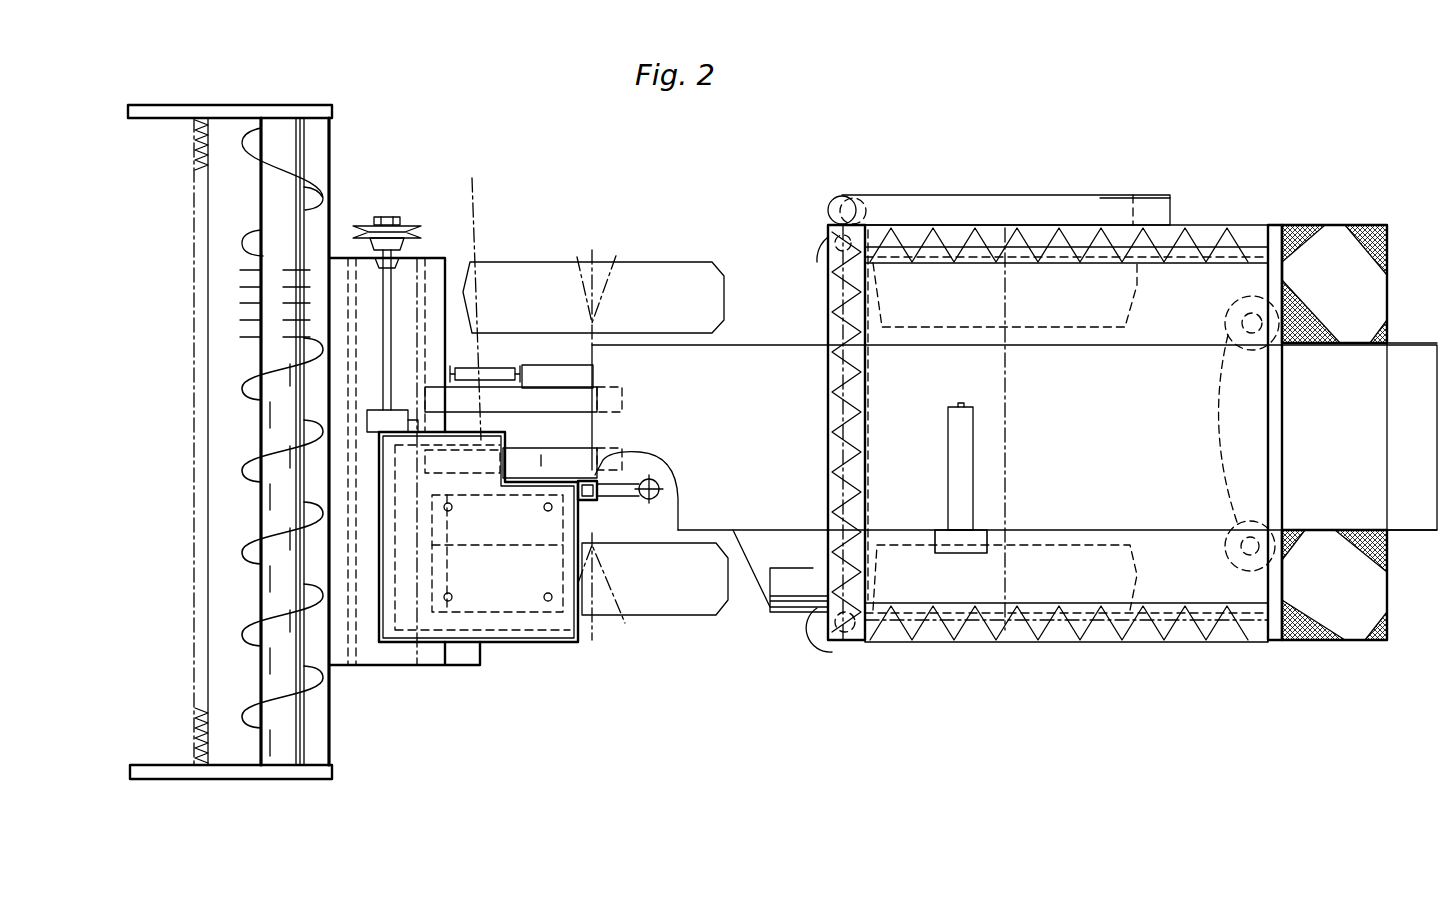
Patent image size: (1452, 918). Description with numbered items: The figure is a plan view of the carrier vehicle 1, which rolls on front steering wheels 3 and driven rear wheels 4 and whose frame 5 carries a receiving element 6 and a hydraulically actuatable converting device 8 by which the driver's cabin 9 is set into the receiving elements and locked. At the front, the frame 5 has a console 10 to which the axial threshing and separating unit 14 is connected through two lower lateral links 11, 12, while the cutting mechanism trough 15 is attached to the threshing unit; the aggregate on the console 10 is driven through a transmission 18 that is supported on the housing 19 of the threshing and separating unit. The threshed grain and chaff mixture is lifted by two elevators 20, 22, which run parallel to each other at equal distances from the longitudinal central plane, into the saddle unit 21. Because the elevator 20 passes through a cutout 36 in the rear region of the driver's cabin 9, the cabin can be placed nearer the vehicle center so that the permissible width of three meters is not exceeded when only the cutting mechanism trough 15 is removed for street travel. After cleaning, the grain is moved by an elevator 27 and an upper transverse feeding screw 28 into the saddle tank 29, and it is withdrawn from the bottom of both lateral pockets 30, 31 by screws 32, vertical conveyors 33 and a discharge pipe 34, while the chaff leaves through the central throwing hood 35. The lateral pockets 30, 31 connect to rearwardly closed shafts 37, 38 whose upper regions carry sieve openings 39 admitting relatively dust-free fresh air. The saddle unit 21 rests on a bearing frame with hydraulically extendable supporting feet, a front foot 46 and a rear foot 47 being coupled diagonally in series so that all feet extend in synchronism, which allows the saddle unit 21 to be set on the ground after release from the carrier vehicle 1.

The carrier vehicle 1 is at (652, 254).
The front steering wheels 3 is at (712, 300).
The rear wheels 4 is at (1073, 320).
The frame 5 is at (667, 505).
The receiving element 6 is at (545, 509).
The converting device 8 is at (661, 488).
The driver's cabin 9 is at (393, 643).
The front console 10 is at (532, 365).
The lower lateral link 11 is at (466, 368).
The lower lateral link 12 is at (470, 293).
The axial threshing and separating unit 14 is at (345, 250).
The cutting mechanism trough 15 is at (267, 783).
The transmission 18 is at (378, 421).
The housing 19 is at (366, 340).
The elevator 20 is at (572, 458).
The saddle unit 21 is at (912, 190).
The elevator 22 is at (580, 396).
The elevator 27 is at (935, 545).
The upper transverse feeding screw 28 is at (955, 412).
The saddle tank 29 is at (1175, 300).
The lateral pocket 30 is at (1165, 335).
The lateral pocket 31 is at (1162, 540).
The screws 32 is at (1040, 235).
The vertical conveyors 33 is at (830, 197).
The discharge pipe 34 is at (1102, 198).
The central throwing hood 35 is at (1417, 507).
The cutout 36 is at (542, 462).
The shaft 37 is at (1315, 612).
The shaft 38 is at (1312, 232).
The sieve openings 39 is at (1347, 403).
The supporting foot 46 is at (818, 237).
The supporting foot 47 is at (1247, 518).